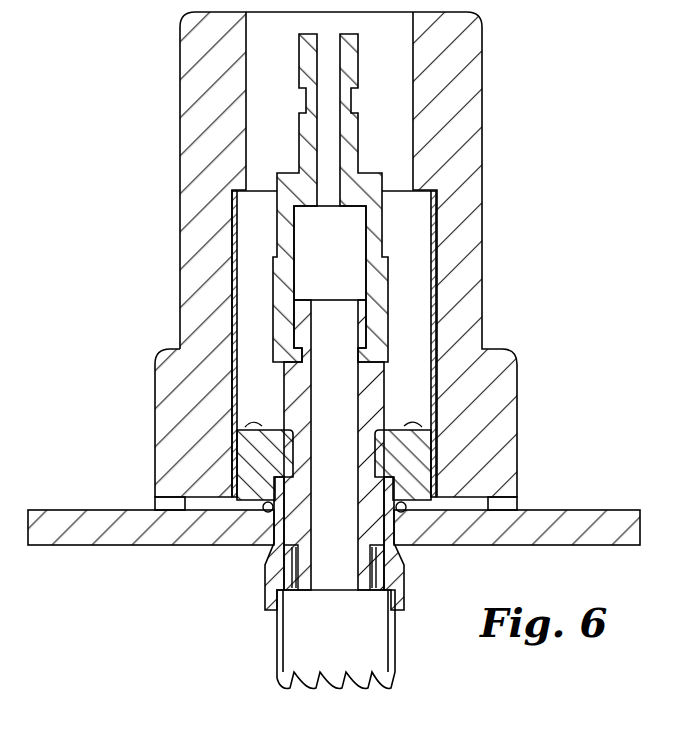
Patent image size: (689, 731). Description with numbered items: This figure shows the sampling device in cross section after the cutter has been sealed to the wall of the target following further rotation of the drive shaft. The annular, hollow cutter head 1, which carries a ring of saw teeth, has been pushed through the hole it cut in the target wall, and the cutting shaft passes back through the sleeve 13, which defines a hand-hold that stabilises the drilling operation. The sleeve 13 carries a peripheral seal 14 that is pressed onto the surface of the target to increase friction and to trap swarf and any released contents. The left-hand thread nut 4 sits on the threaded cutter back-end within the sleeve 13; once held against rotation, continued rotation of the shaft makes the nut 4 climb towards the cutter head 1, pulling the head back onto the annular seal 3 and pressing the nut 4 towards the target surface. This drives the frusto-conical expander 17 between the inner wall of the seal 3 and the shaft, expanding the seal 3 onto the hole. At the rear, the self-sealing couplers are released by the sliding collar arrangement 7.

The cutter head 1 is at (278, 652).
The annular seal 3 is at (263, 563).
The left-hand thread nut 4 is at (240, 452).
The sliding collar arrangement 7 is at (300, 70).
The sleeve 13 is at (482, 238).
The peripheral seal 14 is at (157, 498).
The frusto-conical expander 17 is at (283, 578).